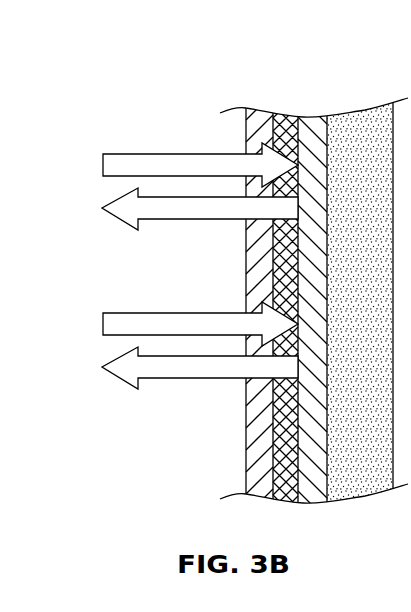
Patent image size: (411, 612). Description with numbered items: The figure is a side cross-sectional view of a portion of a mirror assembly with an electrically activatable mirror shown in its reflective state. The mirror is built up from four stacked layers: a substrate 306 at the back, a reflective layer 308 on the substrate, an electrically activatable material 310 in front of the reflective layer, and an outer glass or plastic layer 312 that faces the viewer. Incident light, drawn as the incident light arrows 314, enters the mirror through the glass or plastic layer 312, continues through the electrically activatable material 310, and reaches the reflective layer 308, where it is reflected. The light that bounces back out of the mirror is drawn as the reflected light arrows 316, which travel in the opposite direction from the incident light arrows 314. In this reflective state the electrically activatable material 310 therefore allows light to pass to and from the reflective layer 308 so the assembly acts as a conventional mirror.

The substrate 306 is at (355, 120).
The reflective layer 308 is at (314, 127).
The electrically activatable material 310 is at (292, 127).
The glass or plastic layer 312 is at (260, 116).
The incident light arrows 314 is at (103, 161).
The reflected light arrows 316 is at (120, 220).